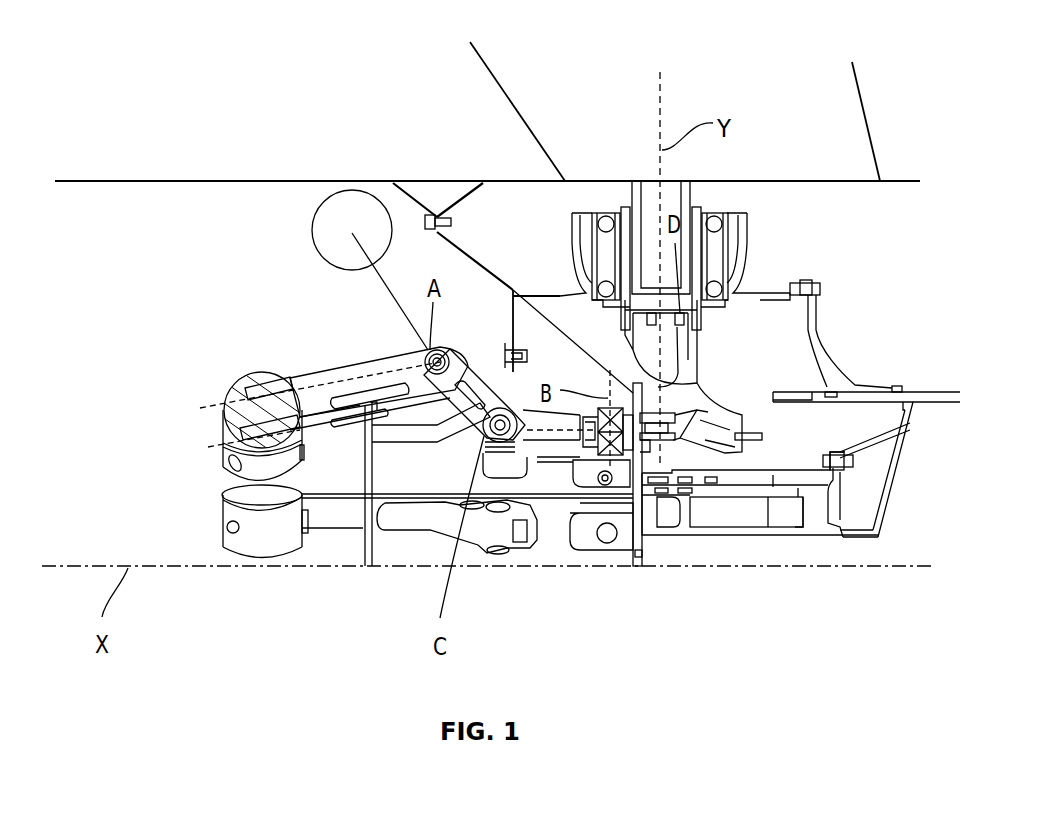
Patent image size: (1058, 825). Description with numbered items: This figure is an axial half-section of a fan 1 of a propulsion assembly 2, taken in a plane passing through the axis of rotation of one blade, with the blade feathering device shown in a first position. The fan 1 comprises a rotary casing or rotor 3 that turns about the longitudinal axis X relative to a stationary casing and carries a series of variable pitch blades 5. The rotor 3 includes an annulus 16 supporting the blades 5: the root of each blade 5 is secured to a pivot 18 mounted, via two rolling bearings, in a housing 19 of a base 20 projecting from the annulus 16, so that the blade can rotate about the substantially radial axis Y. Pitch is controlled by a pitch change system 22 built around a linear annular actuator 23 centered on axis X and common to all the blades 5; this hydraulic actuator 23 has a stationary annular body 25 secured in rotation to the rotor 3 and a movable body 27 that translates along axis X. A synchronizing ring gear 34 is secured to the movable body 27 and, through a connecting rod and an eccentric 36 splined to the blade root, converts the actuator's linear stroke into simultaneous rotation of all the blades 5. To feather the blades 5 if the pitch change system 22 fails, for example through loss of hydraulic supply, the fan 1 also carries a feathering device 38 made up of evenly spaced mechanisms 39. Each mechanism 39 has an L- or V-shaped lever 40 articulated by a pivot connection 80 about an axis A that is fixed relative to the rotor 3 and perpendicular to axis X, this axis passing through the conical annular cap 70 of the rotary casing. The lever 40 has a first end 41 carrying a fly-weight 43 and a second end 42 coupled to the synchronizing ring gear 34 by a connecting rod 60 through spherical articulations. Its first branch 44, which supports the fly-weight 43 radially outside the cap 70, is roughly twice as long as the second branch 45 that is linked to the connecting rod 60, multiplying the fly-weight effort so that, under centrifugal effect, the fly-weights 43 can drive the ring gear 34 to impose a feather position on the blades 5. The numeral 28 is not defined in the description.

The fan 1 is at (203, 38).
The propulsion assembly 2 is at (163, 112).
The rotary casing (rotor) 3 is at (828, 230).
The variable pitch blade 5 is at (508, 64).
The annulus 16 is at (553, 246).
The pivot 18 is at (580, 243).
The housing 19 is at (614, 245).
The base 20 is at (737, 243).
The pitch change system 22 is at (511, 292).
The linear annular actuator 23 is at (740, 545).
The stationary annular body 25 is at (773, 475).
The movable body 27 is at (798, 488).
The stator vane 28 is at (766, 337).
The synchronizing ring gear 34 is at (596, 378).
The eccentric 36 is at (680, 400).
The feathering device 38 is at (165, 478).
The mechanism 39 is at (212, 372).
The lever 40 is at (331, 371).
The first end 41 is at (297, 390).
The second end 42 is at (514, 447).
The fly-weight 43 is at (222, 413).
The first branch 44 is at (362, 356).
The second branch 45 is at (481, 350).
The connecting rod 60 is at (535, 442).
The annular cap 70 is at (393, 543).
The pivot connection 80 is at (425, 336).